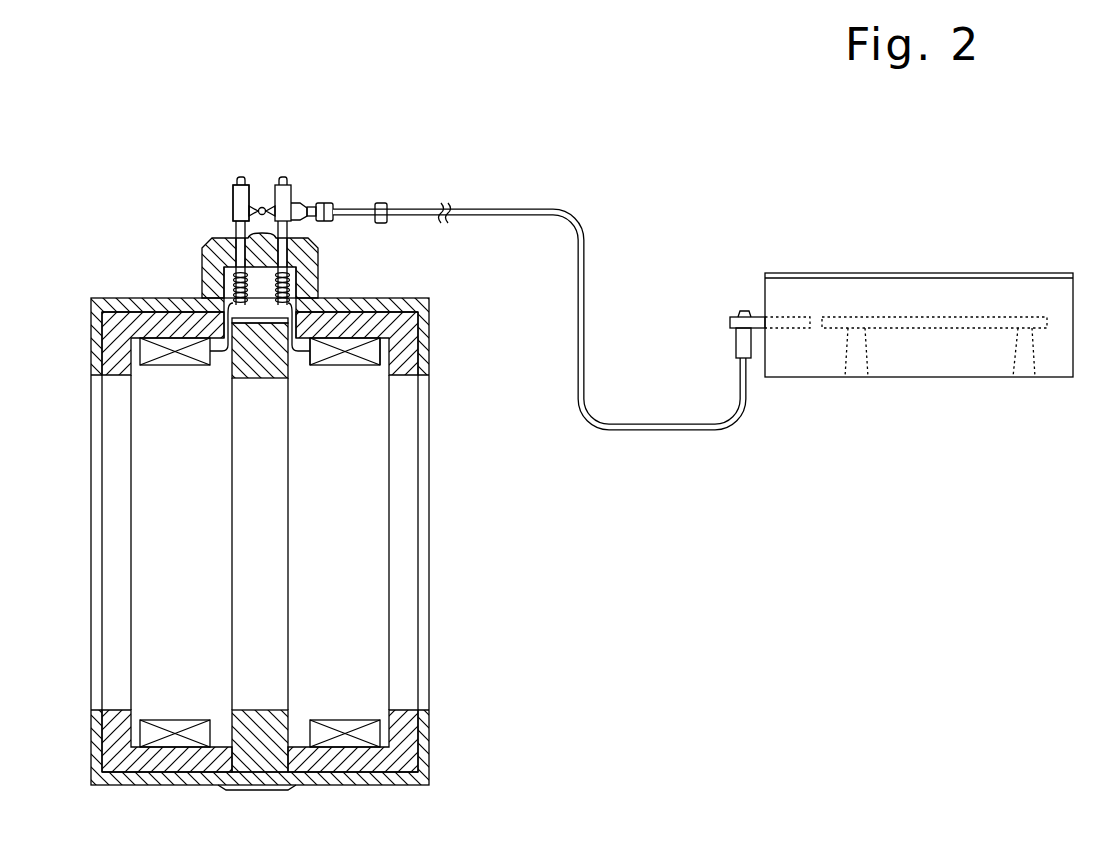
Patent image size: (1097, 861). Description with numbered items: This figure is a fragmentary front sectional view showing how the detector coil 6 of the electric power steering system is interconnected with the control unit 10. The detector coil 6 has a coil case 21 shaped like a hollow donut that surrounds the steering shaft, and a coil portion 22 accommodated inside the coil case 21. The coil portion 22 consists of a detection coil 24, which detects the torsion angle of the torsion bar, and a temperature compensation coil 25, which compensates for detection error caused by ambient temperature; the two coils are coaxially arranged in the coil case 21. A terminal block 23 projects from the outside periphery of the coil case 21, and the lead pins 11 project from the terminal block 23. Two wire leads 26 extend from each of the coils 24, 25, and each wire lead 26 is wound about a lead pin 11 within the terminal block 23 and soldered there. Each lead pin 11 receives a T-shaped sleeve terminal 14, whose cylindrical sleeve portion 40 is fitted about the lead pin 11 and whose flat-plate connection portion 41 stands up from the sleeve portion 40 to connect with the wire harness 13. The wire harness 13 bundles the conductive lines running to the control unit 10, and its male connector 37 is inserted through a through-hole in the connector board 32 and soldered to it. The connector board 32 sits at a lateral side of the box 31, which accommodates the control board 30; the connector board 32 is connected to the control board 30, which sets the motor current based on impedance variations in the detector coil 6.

The detector coil 6 is at (430, 319).
The control unit 10 is at (763, 288).
The lead pins 11 is at (283, 177).
The wire harness 13 is at (508, 209).
The sleeve terminals 14 is at (297, 199).
The coil case 21 is at (107, 352).
The coil portion 22 is at (363, 367).
The terminal block 23 is at (212, 252).
The detection coil 24 is at (177, 366).
The temperature compensation coil 25 is at (340, 368).
The wire leads 26 is at (294, 300).
The control board 30 is at (893, 317).
The box 31 is at (957, 273).
The connector board 32 is at (731, 321).
The male connector 37 is at (736, 348).
The sleeve portion 40 is at (233, 203).
The connection portion 41 is at (329, 203).